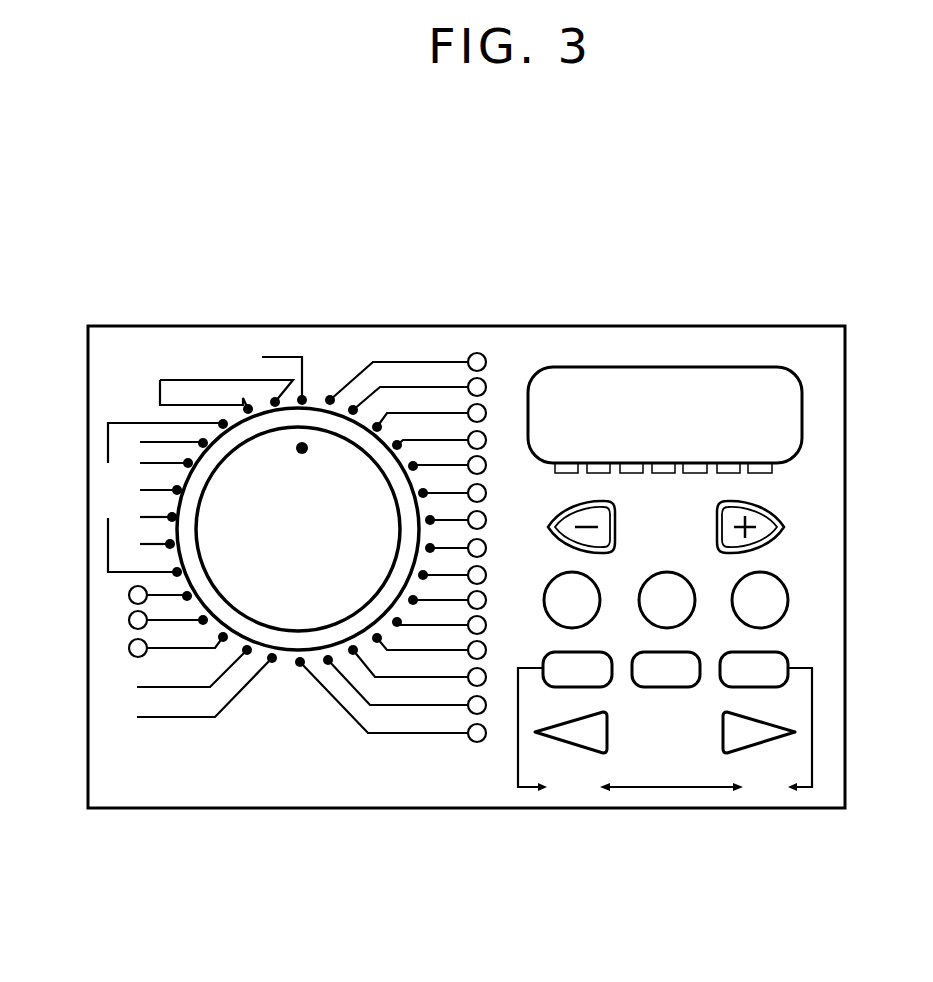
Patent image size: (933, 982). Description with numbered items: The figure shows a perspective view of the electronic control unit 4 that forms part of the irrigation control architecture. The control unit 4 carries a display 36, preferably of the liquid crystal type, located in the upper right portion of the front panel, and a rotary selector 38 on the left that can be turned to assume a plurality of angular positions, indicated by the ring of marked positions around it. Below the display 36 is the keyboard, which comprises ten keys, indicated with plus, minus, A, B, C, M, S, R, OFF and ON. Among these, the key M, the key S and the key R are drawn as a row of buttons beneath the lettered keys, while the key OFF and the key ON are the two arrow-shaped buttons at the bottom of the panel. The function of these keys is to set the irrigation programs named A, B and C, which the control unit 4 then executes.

The electronic control unit 4 is at (781, 135).
The display 36 is at (680, 367).
The rotary selector 38 is at (345, 458).
The M key M is at (558, 688).
The S key S is at (680, 688).
The R key R is at (782, 690).
The OFF key OFF is at (607, 752).
The ON key ON is at (790, 740).